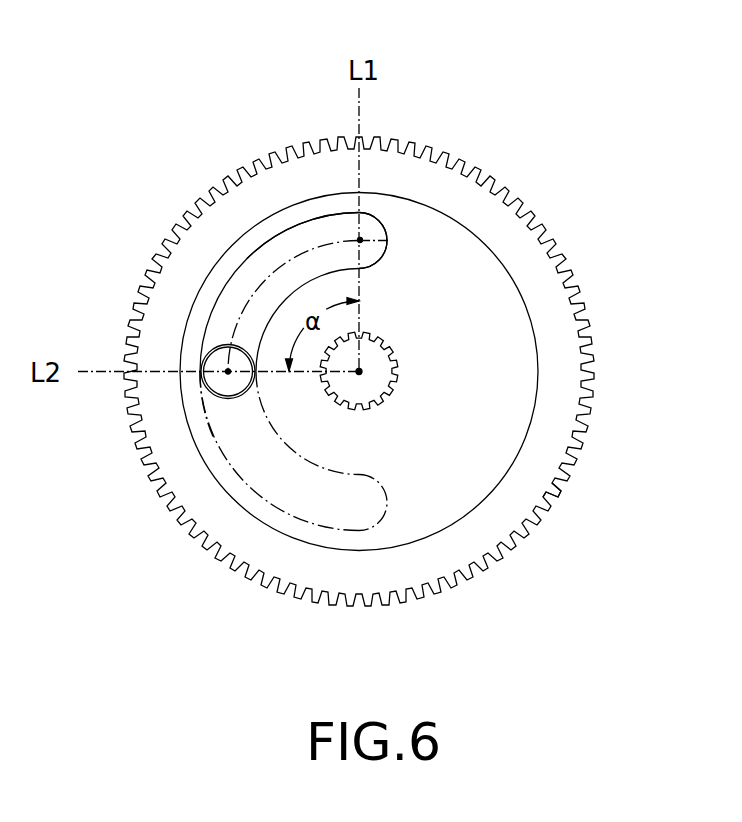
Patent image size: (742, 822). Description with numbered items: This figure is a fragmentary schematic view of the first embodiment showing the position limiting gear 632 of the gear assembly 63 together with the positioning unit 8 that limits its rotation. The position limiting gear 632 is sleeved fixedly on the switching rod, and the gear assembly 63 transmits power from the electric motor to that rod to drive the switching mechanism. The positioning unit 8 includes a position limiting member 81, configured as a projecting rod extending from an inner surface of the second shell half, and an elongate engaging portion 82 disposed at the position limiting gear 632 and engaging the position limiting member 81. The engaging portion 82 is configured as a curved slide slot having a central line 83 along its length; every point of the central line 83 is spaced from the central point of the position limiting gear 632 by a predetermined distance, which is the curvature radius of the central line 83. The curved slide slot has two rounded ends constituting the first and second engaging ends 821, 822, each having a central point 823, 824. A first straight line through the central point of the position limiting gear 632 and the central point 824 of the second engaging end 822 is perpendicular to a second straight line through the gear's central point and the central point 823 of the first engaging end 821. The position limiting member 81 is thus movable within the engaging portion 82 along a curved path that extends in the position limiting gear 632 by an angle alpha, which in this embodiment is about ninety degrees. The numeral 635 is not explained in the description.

The positioning unit 8 is at (210, 297).
The gear assembly 63 is at (582, 267).
The position limiting member 81 is at (212, 394).
The engaging portion 82 is at (292, 232).
The central line 83 is at (266, 278).
The position limiting gear 632 is at (553, 503).
The gear shaft 635 is at (359, 372).
The first engaging end 821 is at (230, 407).
The second engaging end 822 is at (375, 217).
The central point 823 is at (228, 371).
The central point 824 is at (388, 241).